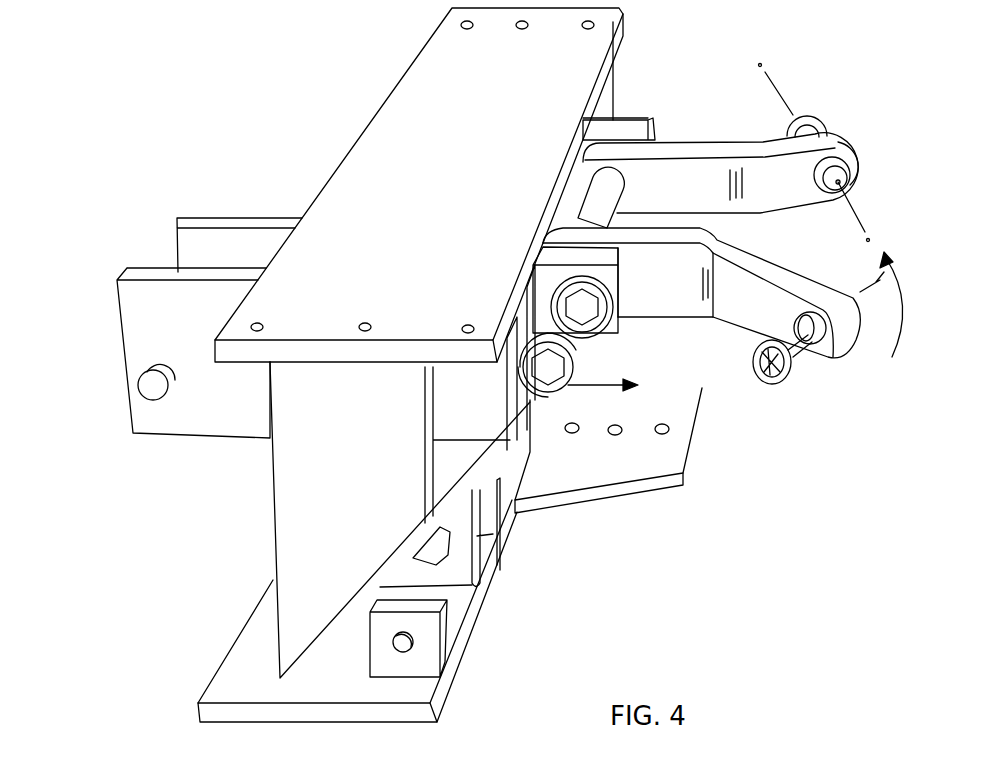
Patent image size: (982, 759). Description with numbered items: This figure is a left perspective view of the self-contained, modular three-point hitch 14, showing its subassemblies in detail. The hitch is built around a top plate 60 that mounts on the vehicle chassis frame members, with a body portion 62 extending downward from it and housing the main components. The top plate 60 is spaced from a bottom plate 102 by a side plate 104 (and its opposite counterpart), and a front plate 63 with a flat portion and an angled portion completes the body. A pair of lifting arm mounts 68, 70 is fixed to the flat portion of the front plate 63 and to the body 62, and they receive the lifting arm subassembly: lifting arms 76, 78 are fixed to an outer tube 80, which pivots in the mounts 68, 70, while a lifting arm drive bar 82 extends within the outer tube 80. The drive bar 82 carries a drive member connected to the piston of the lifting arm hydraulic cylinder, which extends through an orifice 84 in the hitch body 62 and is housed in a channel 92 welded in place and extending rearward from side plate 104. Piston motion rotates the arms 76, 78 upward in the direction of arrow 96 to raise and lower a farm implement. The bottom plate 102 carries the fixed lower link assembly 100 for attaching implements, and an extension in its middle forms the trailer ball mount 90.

The three-point hitch 14 is at (240, 23).
The top plate 60 is at (421, 78).
The body portion 62 is at (272, 538).
The front plate 63 is at (528, 430).
The lifting arm mount 68 is at (623, 285).
The lifting arm mount 70 is at (630, 125).
The lifting arm 76 is at (773, 272).
The lifting arm 78 is at (695, 152).
The outer tube 80 is at (597, 205).
The lifting arm drive bar 82 is at (592, 350).
The orifice 84 is at (597, 388).
The trailer ball mount 90 is at (663, 457).
The channel 92 is at (142, 325).
The arrow 96 is at (893, 337).
The fixed lower link assembly 100 is at (495, 533).
The bottom plate 102 is at (232, 681).
The side plate 104 is at (320, 474).